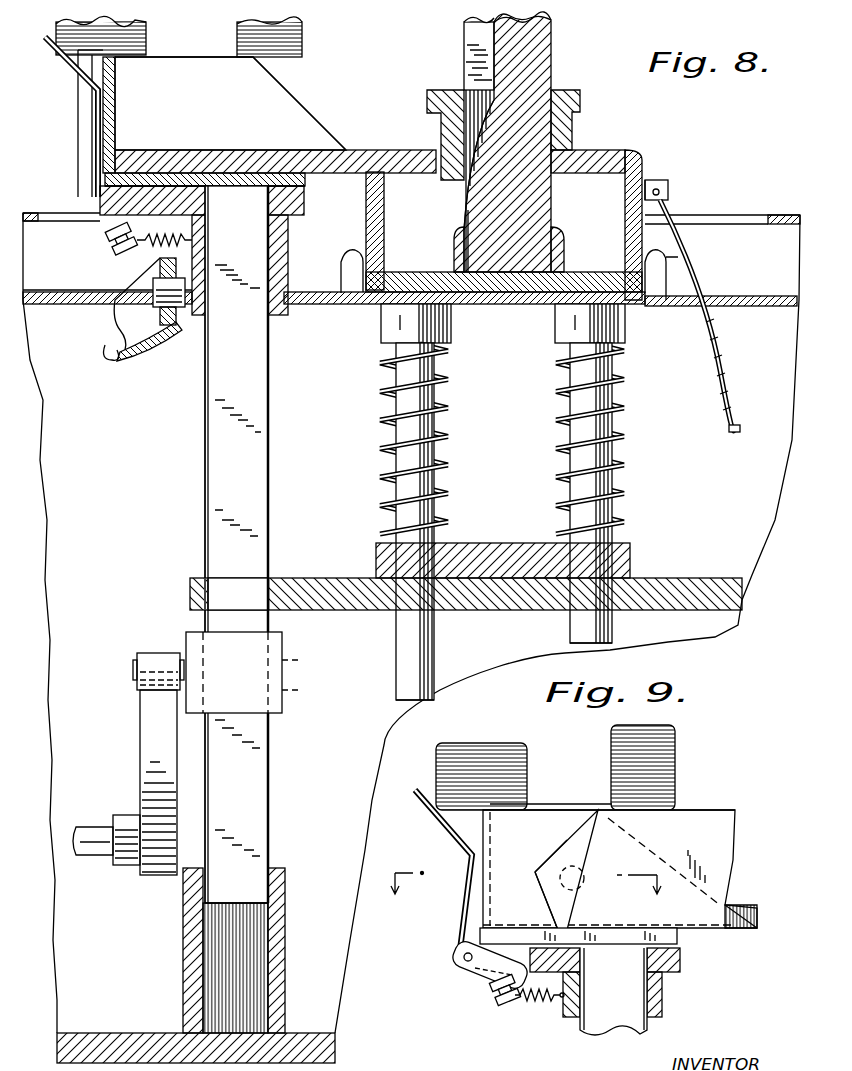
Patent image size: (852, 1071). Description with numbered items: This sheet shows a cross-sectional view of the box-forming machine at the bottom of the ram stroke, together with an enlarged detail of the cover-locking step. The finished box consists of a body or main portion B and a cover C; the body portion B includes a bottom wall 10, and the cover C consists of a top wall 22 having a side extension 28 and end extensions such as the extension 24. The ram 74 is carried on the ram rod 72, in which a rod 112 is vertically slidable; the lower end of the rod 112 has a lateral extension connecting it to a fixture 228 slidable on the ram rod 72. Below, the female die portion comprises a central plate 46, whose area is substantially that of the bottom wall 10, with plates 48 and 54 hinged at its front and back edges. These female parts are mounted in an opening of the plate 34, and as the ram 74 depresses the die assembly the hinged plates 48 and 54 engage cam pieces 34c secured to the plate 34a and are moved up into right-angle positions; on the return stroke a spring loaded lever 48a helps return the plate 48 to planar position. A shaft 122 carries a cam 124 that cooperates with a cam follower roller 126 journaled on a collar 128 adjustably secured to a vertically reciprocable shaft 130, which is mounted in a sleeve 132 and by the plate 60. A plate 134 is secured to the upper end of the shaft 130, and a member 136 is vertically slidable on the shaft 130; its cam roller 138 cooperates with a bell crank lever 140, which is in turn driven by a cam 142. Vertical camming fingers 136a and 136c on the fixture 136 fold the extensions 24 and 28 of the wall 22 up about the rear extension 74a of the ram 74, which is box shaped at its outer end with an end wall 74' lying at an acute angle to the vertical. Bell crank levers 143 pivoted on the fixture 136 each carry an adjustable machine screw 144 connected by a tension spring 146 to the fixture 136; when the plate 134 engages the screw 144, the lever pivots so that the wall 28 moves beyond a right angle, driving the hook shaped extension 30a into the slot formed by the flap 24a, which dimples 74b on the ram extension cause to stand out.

In FIG. 8, the side extension 28 is at (104, 80).
In FIG. 8, the camming finger 136c is at (140, 33).
In FIG. 9, the camming finger 136c is at (618, 747).
In FIG. 8, the camming finger 136a is at (70, 68).
In FIG. 8, the end wall 74' is at (230, 103).
In FIG. 8, the rear extension 74a is at (218, 150).
In FIG. 9, the rear extension 74a is at (568, 805).
In FIG. 8, the top wall 22 is at (177, 172).
In FIG. 8, the plate 134 is at (289, 150).
In FIG. 9, the plate 134 is at (670, 941).
In FIG. 8, the cover C is at (340, 178).
In FIG. 8, the rod 112 is at (466, 32).
In FIG. 8, the ram rod 72 is at (541, 55).
In FIG. 8, the fixture 228 is at (570, 124).
In FIG. 8, the plate 34 is at (777, 214).
In FIG. 8, the ram 74 is at (512, 181).
In FIG. 8, the body portion B is at (384, 192).
In FIG. 8, the hinged plate 54 is at (366, 206).
In FIG. 8, the fixture 136 is at (294, 215).
In FIG. 9, the fixture 136 is at (680, 963).
In FIG. 8, the cam pieces 34c is at (351, 268).
In FIG. 8, the hinged plate 48 is at (642, 233).
In FIG. 8, the spring loaded lever 48a is at (697, 248).
In FIG. 8, the plate 34a is at (758, 304).
In FIG. 8, the central plate 46 is at (492, 304).
In FIG. 8, the cam 142 is at (93, 166).
In FIG. 8, the adjustable machine screw 144 is at (117, 249).
In FIG. 9, the adjustable machine screw 144 is at (498, 1004).
In FIG. 8, the tension spring 146 is at (150, 245).
In FIG. 9, the tension spring 146 is at (540, 1002).
In FIG. 8, the bell crank lever 140 is at (118, 345).
In FIG. 8, the cam roller 138 is at (182, 307).
In FIG. 8, the plate 60 is at (645, 590).
In FIG. 8, the cam follower roller 126 is at (155, 660).
In FIG. 8, the collar 128 is at (283, 648).
In FIG. 8, the cam 124 is at (150, 744).
In FIG. 8, the vertically reciprocable shaft 130 is at (270, 761).
In FIG. 9, the vertically reciprocable shaft 130 is at (632, 997).
In FIG. 8, the shaft 122 is at (93, 835).
In FIG. 8, the sleeve 132 is at (192, 961).
In FIG. 9, the hook shaped extension 30a is at (536, 845).
In FIG. 9, the dimples 74b is at (590, 866).
In FIG. 9, the end extension 24 is at (718, 831).
In FIG. 9, the flap 24a is at (547, 880).
In FIG. 9, the bottom wall 10 is at (527, 896).
In FIG. 9, the bell crank lever 143 is at (477, 974).